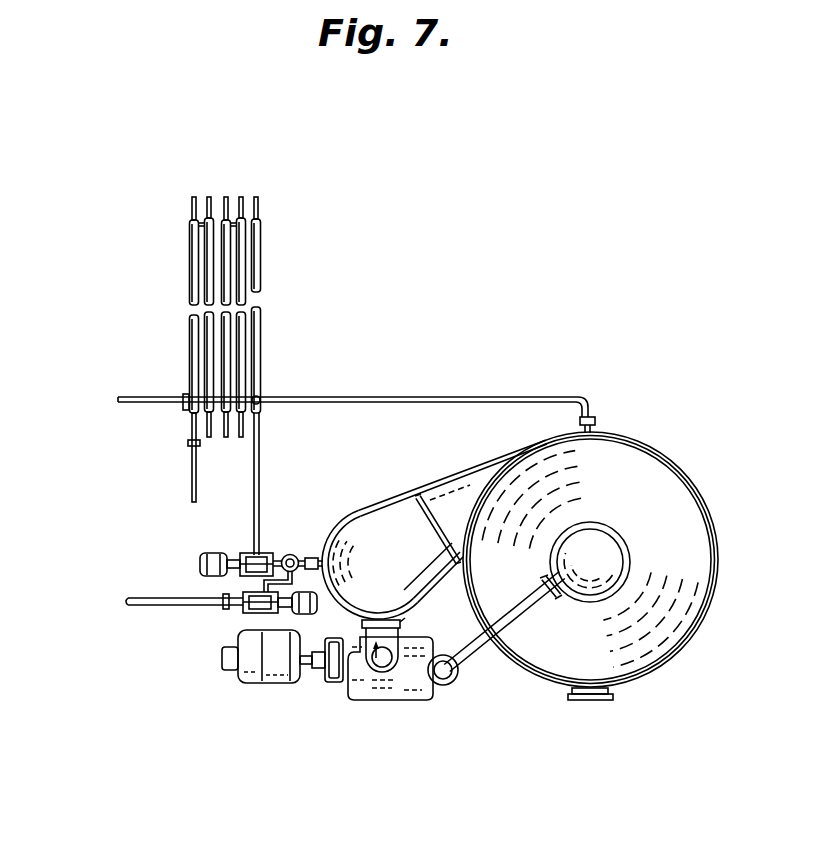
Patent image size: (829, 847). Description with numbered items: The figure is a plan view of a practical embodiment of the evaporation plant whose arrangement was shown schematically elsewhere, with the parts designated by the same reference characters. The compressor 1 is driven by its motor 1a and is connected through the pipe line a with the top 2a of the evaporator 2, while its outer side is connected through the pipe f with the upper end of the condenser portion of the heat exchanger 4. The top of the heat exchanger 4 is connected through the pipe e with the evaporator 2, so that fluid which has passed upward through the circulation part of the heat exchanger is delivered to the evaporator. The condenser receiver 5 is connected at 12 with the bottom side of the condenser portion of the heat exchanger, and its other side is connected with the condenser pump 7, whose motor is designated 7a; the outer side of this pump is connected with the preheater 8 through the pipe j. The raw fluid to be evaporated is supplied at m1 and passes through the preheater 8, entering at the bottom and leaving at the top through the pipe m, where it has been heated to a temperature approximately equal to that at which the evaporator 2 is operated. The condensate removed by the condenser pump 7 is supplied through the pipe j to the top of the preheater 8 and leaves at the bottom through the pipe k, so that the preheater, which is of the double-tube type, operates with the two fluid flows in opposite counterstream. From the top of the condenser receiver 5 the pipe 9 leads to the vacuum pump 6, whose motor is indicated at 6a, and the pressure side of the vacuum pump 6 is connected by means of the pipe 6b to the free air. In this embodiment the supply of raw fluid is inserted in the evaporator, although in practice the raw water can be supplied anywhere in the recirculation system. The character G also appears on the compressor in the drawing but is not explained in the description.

The compressor 1 is at (406, 673).
The motor 1a is at (278, 689).
The evaporator 2 is at (680, 488).
The top of the evaporator 2a is at (597, 537).
The heat exchanger 4 is at (434, 527).
The condenser receiver 5 is at (296, 547).
The vacuum pump 6 is at (250, 614).
The motor 6a is at (310, 613).
The pipe 6b is at (155, 607).
The condenser pump 7 is at (268, 554).
The motor 7a is at (206, 558).
The preheater 8 is at (260, 264).
The pipe 9 is at (292, 583).
The connection point 12 is at (313, 557).
The pipe line a is at (483, 655).
The conduit e is at (470, 478).
The pipe f is at (401, 636).
The compressor cylinder G is at (366, 638).
The pipe j is at (259, 498).
The pipe k is at (192, 490).
The pipe m is at (432, 397).
The raw fluid supply point m1 is at (118, 401).